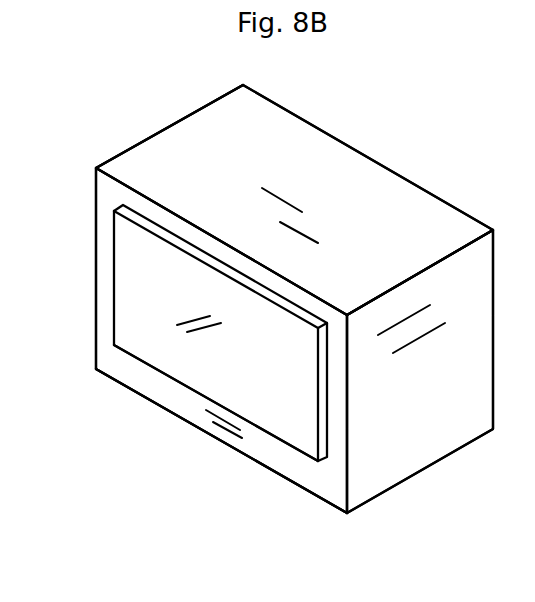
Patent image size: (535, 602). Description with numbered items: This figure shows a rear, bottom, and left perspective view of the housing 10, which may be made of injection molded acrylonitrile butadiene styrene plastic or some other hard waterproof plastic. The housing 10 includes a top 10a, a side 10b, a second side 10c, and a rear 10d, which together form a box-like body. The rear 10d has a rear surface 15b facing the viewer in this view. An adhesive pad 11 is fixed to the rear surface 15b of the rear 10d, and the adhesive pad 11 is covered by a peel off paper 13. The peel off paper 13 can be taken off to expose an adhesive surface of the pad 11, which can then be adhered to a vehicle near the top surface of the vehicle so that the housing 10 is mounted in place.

The housing 10 is at (400, 152).
The top 10a is at (250, 163).
The side 10b is at (403, 438).
The side 10c is at (132, 148).
The rear 10d is at (160, 385).
The adhesive pad 11 is at (152, 228).
The peel off paper 13 is at (142, 338).
The rear surface 15b is at (127, 368).